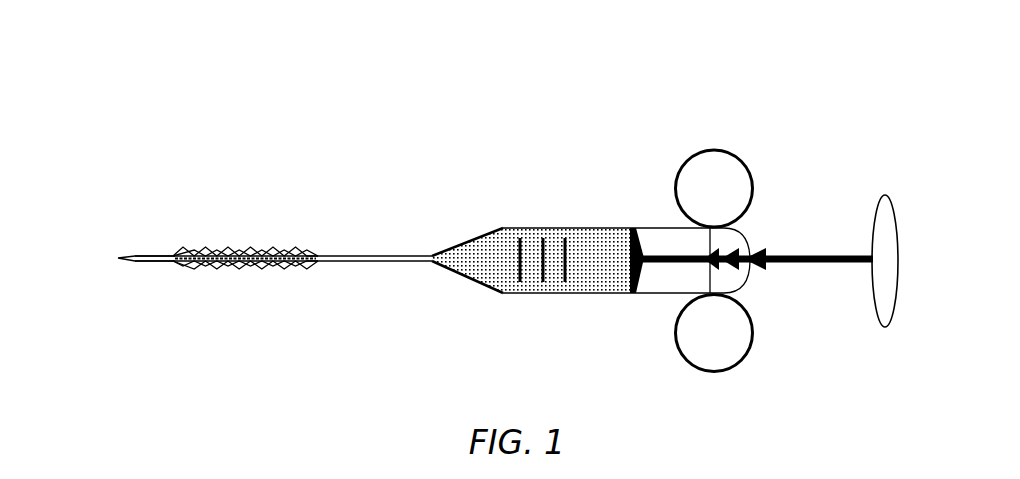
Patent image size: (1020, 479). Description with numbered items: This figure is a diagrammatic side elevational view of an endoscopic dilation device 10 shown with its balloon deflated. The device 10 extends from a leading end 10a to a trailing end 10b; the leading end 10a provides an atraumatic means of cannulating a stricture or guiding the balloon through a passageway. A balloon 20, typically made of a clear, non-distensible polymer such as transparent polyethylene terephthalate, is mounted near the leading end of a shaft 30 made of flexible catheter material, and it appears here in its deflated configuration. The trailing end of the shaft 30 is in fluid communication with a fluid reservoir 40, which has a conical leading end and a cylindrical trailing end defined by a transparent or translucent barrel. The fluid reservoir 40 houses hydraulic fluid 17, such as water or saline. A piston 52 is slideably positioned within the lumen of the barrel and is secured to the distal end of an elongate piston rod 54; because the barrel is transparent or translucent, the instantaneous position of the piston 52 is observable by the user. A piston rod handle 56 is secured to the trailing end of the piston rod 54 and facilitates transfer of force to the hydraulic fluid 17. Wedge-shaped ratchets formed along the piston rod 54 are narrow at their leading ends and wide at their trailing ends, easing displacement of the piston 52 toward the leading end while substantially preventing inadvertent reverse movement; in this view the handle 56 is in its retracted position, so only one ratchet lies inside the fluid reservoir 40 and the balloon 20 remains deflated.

The endoscopic dilation device 10 is at (530, 90).
The leading end 10a is at (120, 258).
The trailing end 10b is at (743, 282).
The hydraulic fluid 17 is at (493, 265).
The balloon 20 is at (240, 268).
The shaft 30 is at (395, 262).
The fluid reservoir 40 is at (518, 295).
The piston 52 is at (632, 228).
The piston rod 54 is at (655, 265).
The piston rod handle 56 is at (883, 194).